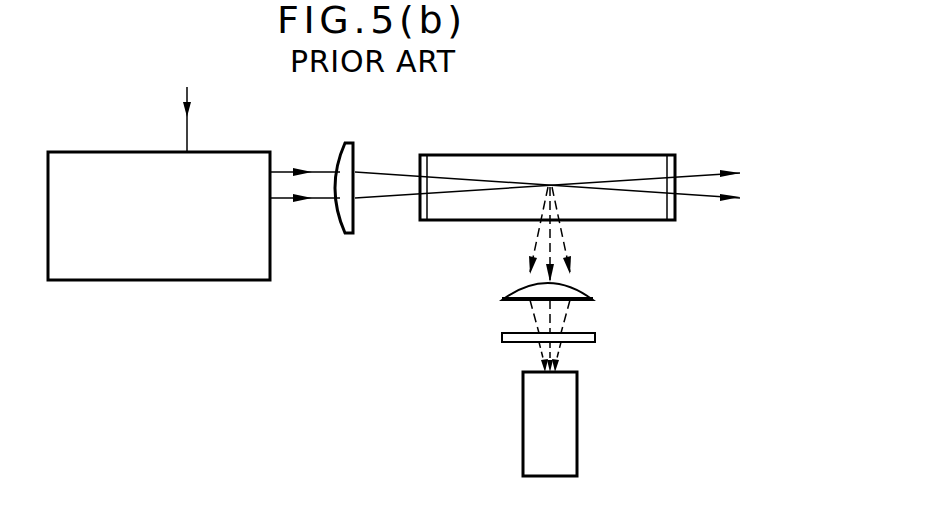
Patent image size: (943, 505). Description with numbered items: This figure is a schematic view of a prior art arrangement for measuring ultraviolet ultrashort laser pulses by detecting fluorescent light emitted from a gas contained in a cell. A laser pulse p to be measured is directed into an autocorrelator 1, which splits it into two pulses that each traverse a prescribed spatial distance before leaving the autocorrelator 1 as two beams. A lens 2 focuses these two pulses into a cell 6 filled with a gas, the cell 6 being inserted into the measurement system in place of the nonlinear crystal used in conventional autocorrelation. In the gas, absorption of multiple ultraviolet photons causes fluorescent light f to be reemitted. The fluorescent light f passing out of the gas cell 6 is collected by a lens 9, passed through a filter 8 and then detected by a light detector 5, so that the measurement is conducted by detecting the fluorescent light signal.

The autocorrelator 1 is at (76, 152).
The laser pulse p is at (173, 115).
The lens 2 is at (355, 155).
The cell 6 is at (661, 155).
The fluorescent light f is at (531, 260).
The lens 9 is at (594, 294).
The filter 8 is at (596, 333).
The light detector 5 is at (577, 388).